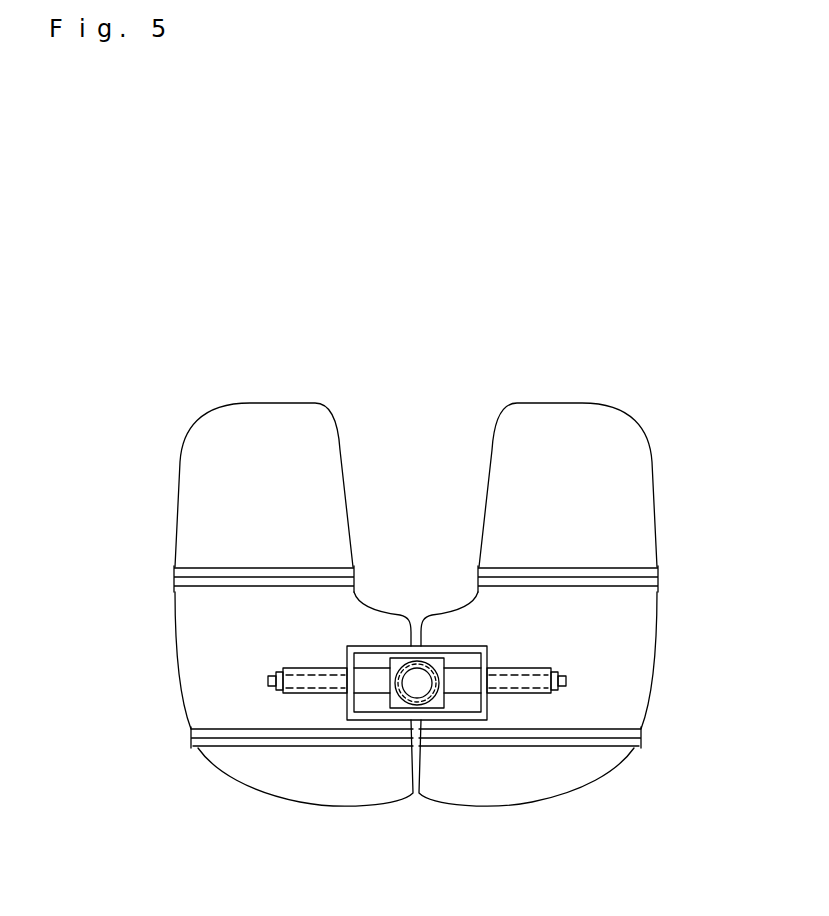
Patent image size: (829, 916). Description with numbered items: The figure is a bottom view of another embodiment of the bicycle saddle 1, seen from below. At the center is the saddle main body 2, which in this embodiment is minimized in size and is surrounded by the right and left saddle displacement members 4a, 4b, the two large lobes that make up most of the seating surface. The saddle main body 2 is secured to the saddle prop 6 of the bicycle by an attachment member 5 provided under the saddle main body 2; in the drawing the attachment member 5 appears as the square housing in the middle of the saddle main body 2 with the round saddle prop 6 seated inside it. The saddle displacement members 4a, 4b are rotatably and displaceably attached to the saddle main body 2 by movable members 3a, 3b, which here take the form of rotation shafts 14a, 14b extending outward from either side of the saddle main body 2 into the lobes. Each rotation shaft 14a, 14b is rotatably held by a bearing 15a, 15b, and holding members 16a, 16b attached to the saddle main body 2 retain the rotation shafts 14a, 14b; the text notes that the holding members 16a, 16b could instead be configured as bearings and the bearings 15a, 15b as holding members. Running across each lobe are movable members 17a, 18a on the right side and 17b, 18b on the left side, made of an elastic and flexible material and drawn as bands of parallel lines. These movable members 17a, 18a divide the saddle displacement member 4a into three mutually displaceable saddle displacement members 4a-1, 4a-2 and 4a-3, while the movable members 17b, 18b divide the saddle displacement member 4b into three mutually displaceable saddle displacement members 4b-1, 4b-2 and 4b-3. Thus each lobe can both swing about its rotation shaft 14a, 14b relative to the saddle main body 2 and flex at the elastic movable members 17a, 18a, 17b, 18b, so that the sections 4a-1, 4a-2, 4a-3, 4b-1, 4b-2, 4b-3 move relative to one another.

The saddle 1 is at (176, 697).
The saddle main body 2 is at (367, 707).
The movable member 3a is at (298, 654).
The movable member 3b is at (549, 664).
The saddle displacement member 4a is at (243, 395).
The saddle displacement member 4b is at (586, 394).
The saddle displacement member 4a-1 is at (195, 452).
The saddle displacement member 4b-1 is at (632, 470).
The saddle displacement member 4a-2 is at (190, 608).
The saddle displacement member 4b-2 is at (632, 627).
The saddle displacement member 4a-3 is at (220, 757).
The saddle displacement member 4b-3 is at (583, 765).
The attachment member 5 is at (398, 665).
The saddle prop 6 is at (432, 698).
The rotation shaft 14a is at (268, 680).
The rotation shaft 14b is at (566, 683).
The bearing 15a is at (295, 693).
The bearing 15b is at (513, 700).
The holding member 16a is at (373, 683).
The holding member 16b is at (458, 688).
The movable member 17a is at (175, 580).
The movable member 17b is at (658, 585).
The movable member 18a is at (190, 733).
The movable member 18b is at (635, 742).